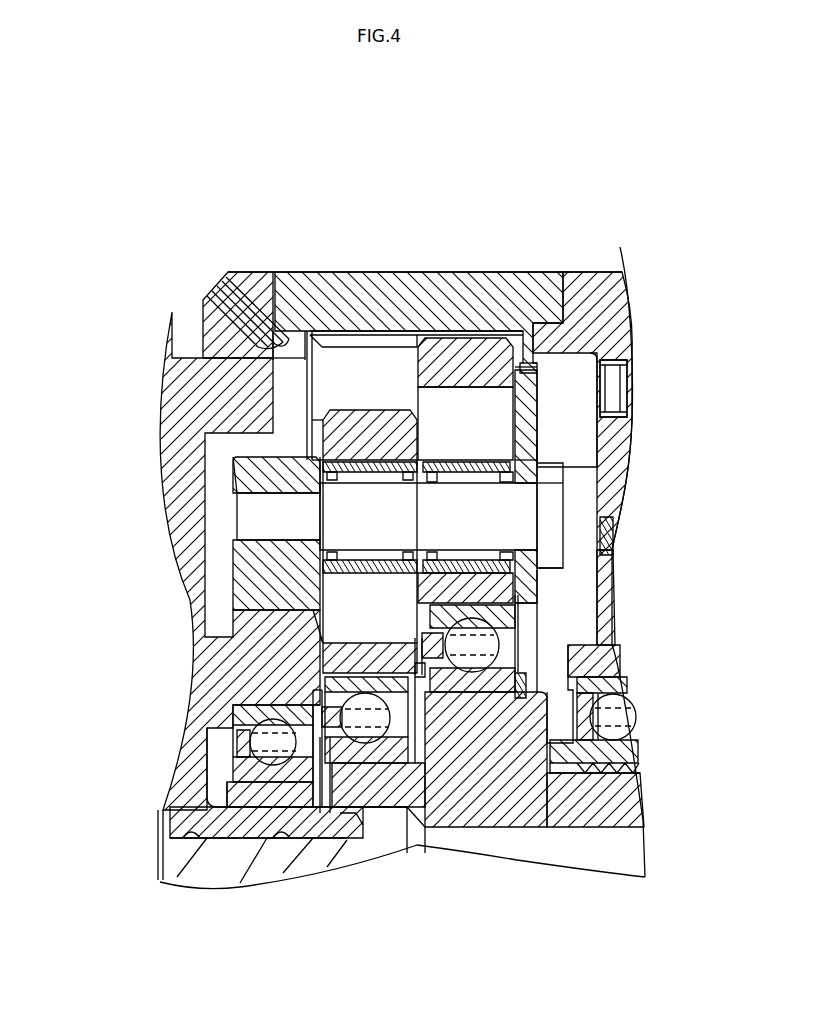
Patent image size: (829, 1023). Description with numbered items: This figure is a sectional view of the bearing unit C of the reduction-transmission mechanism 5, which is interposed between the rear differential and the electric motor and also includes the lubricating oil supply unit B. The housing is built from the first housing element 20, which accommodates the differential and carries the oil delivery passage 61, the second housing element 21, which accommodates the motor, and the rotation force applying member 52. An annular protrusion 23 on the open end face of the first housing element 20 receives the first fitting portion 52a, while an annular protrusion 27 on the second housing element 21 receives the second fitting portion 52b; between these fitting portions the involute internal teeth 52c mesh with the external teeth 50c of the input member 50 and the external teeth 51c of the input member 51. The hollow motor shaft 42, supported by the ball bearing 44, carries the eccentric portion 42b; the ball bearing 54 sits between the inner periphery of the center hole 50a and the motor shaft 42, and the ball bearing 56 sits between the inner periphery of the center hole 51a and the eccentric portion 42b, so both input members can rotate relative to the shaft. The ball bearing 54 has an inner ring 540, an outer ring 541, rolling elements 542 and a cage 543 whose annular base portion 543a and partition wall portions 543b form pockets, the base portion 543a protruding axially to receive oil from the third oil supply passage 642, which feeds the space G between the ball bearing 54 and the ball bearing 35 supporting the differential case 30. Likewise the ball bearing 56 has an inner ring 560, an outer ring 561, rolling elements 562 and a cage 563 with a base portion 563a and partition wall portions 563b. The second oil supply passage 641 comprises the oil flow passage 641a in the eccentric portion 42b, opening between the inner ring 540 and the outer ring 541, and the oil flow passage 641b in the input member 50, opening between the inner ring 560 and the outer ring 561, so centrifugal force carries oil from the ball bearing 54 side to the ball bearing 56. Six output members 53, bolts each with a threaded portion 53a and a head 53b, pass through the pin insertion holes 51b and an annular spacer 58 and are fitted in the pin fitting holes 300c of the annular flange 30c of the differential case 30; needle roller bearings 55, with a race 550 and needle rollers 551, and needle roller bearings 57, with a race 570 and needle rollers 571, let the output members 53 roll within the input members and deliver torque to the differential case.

The reduction-transmission mechanism 5 is at (509, 715).
The first housing element 20 is at (252, 267).
The second housing element 21 is at (597, 270).
The annular protrusion 23 is at (297, 333).
The annular protrusion 27 is at (585, 332).
The differential case 30 is at (178, 764).
The annular flange 30c is at (276, 565).
The ball bearing 35 is at (300, 775).
The motor shaft 42 is at (630, 798).
The eccentric portion 42b is at (600, 712).
The ball bearing 44 is at (632, 750).
The input member 50 is at (313, 430).
The center hole 50a is at (321, 646).
The external teeth 50c is at (350, 414).
The input member 51 is at (541, 362).
The center hole 51a is at (522, 612).
The pin insertion holes 51b is at (541, 378).
The external teeth 51c is at (478, 338).
The rotation force applying member 52 is at (370, 271).
The first fitting portion 52a is at (273, 327).
The second fitting portion 52b is at (522, 362).
The internal teeth 52c is at (398, 330).
The output members 53 is at (566, 502).
The threaded portion 53a is at (275, 497).
The head 53b is at (572, 505).
The ball bearing 54 is at (320, 750).
The needle roller bearings 55 is at (379, 452).
The ball bearing 56 is at (522, 650).
The needle roller bearings 57 is at (540, 440).
The annular spacer 58 is at (545, 470).
The oil delivery passage 61 is at (250, 318).
The pin fitting holes 300c is at (272, 520).
The inner ring 540 is at (345, 768).
The outer ring 541 is at (419, 735).
The rolling elements 542 is at (435, 665).
The cage 543 is at (328, 742).
The annular base portion 543a is at (311, 731).
The partition wall portions 543b is at (318, 690).
The race 550 is at (322, 425).
The needle rollers 551 is at (300, 482).
The inner ring 560 is at (580, 697).
The outer ring 561 is at (523, 598).
The rolling elements 562 is at (521, 630).
The cage 563 is at (447, 705).
The annular base portion 563a is at (410, 666).
The partition wall portions 563b is at (623, 657).
The race 570 is at (518, 457).
The needle rollers 571 is at (548, 490).
The second oil supply passage 641 is at (68, 540).
The oil flow passage 641a is at (316, 660).
The oil flow passage 641b is at (278, 582).
The third oil supply passage 642 is at (307, 772).
The lubricating oil supply unit B is at (262, 782).
The bearing unit C is at (525, 580).
The space G is at (404, 721).